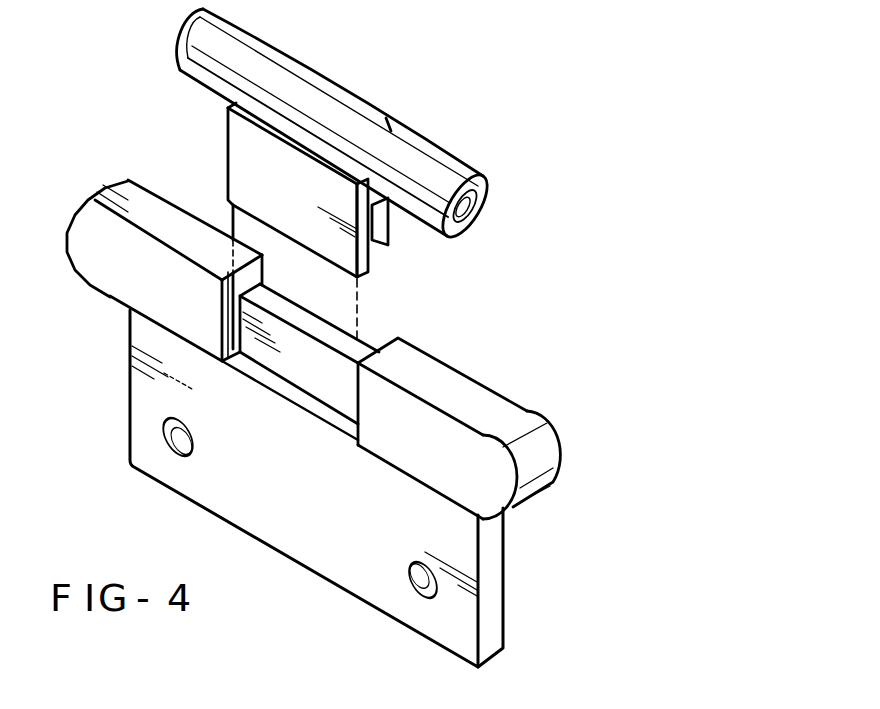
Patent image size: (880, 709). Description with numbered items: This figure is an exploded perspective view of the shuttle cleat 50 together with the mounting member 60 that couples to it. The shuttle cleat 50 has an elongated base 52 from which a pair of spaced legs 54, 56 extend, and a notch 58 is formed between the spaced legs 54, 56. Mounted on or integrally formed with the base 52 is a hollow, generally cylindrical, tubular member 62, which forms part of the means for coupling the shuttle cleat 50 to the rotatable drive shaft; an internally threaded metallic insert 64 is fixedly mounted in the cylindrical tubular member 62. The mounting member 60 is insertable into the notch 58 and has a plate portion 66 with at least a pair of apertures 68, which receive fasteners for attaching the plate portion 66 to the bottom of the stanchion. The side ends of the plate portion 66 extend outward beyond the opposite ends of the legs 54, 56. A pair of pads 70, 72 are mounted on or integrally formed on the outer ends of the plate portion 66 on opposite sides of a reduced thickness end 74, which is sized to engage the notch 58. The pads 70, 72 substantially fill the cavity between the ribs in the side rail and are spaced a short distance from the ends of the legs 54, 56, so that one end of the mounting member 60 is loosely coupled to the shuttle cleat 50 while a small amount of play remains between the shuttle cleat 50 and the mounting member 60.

The shuttle cleat 50 is at (374, 125).
The elongated base 52 is at (478, 226).
The leg 54 is at (396, 226).
The leg 56 is at (387, 253).
The notch 58 is at (390, 249).
The mounting member 60 is at (314, 488).
The cylindrical tubular member 62 is at (393, 126).
The internally threaded metallic insert 64 is at (502, 175).
The plate portion 66 is at (462, 541).
The apertures 68 is at (167, 432).
The pad 70 is at (480, 443).
The pad 72 is at (101, 213).
The reduced thickness end 74 is at (309, 352).